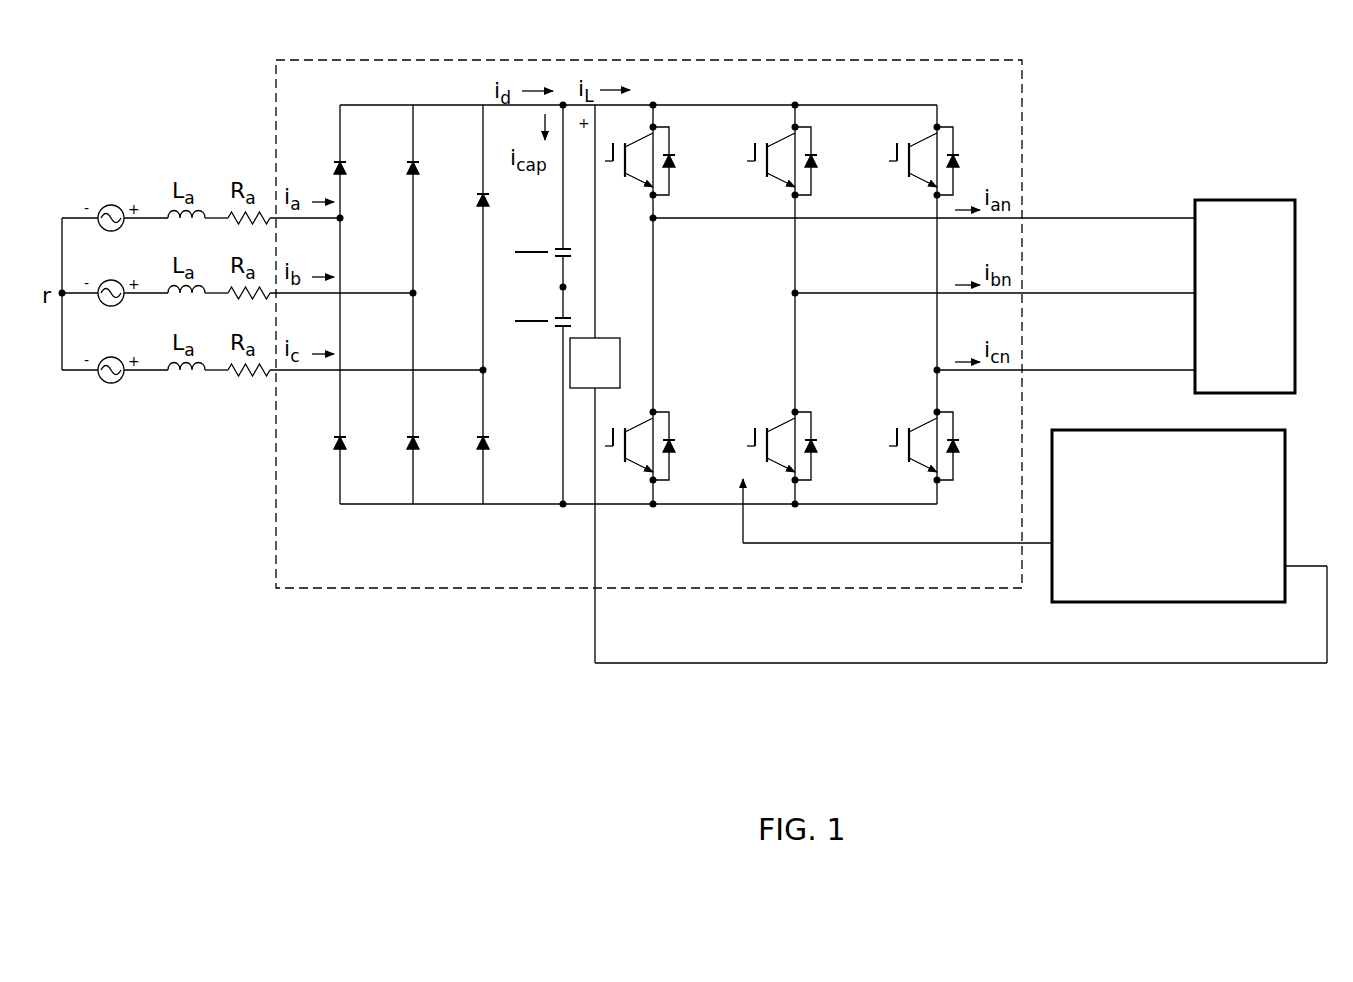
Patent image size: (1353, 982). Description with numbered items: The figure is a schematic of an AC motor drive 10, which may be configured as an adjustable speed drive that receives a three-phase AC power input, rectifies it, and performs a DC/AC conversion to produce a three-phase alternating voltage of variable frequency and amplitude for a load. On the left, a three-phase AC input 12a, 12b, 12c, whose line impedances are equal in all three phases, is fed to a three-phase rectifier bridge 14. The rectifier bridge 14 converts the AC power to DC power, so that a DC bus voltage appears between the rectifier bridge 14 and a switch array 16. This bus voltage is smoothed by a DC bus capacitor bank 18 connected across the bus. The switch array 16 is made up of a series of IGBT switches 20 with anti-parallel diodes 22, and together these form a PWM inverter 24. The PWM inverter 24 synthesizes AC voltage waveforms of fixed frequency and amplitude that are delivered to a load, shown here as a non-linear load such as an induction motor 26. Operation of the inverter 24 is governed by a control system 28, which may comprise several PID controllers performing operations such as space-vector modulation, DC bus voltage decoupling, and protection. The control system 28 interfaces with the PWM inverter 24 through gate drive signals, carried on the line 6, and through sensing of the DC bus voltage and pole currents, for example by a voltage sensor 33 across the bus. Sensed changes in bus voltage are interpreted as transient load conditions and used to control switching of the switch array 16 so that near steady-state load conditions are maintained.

The gate control signal line 6 is at (897, 511).
The AC motor drive 10 is at (1022, 96).
The three-phase AC input 12a is at (101, 208).
The three-phase AC input 12b is at (118, 282).
The three-phase AC input 12c is at (113, 383).
The three-phase rectifier bridge 14 is at (358, 527).
The switch array 16 is at (806, 344).
The DC bus capacitor bank 18 is at (572, 326).
The IGBT switches 20 is at (770, 298).
The anti-parallel diodes 22 is at (672, 160).
The PWM inverter 24 is at (806, 305).
The induction motor 26 is at (1297, 222).
The control system 28 is at (1288, 452).
The voltage sensor 33 is at (622, 365).